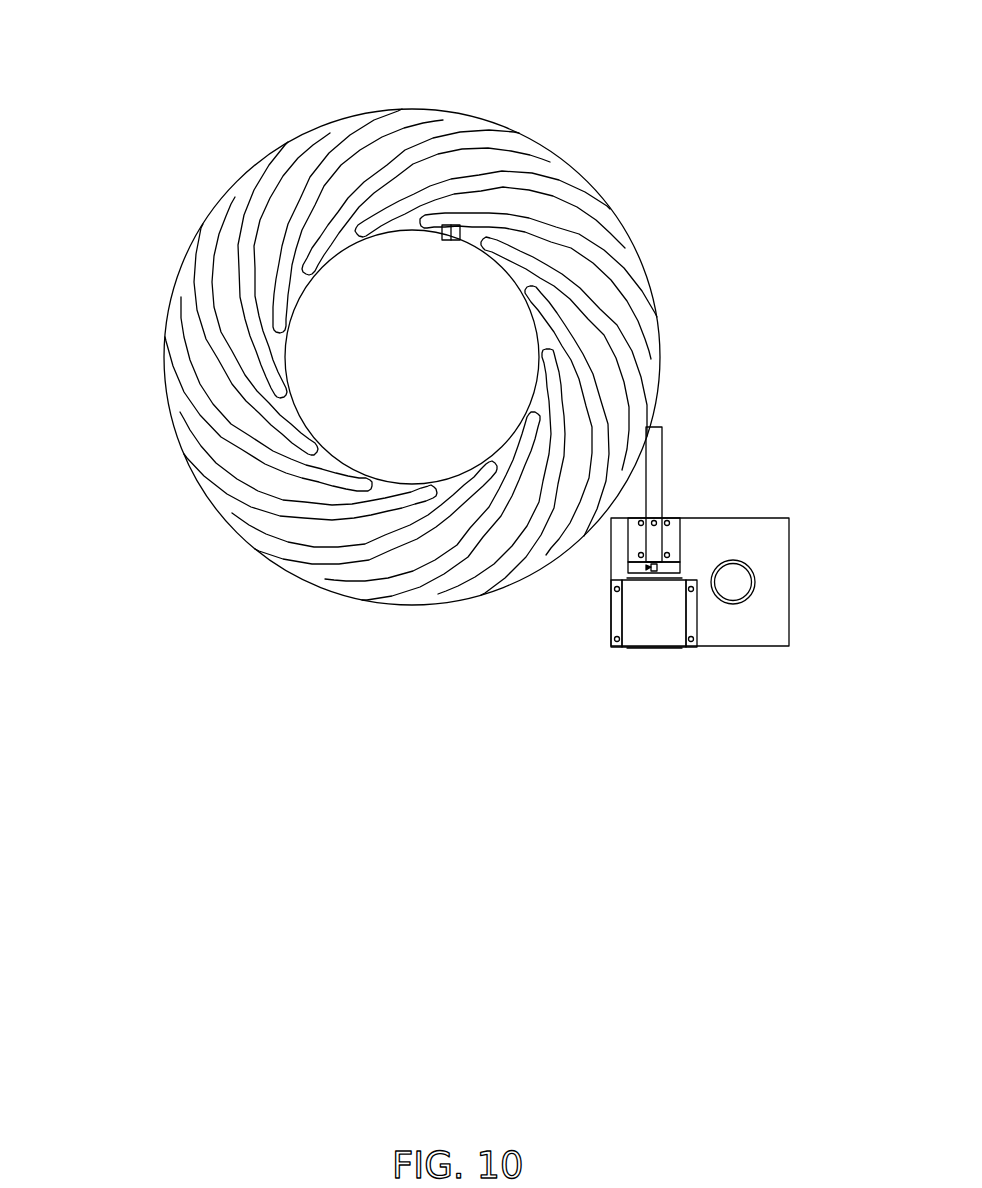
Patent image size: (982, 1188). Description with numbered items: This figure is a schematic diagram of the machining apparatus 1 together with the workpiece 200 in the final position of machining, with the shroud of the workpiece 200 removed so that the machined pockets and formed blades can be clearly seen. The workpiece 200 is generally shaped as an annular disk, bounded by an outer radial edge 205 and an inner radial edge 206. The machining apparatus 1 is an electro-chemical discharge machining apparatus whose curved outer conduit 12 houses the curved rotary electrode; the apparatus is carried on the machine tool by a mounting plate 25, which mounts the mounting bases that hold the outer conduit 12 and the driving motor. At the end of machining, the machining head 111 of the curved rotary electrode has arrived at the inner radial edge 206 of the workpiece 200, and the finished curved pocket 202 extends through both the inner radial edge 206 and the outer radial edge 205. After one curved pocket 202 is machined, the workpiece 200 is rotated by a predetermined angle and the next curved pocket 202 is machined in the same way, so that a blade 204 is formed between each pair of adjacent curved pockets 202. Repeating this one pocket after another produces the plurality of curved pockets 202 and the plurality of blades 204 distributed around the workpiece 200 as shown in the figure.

The machining apparatus 1 is at (653, 436).
The curved outer conduit 12 is at (653, 412).
The mounting plate 25 is at (777, 573).
The machining head 111 is at (447, 242).
The workpiece 200 is at (417, 385).
The curved pocket 202 is at (533, 172).
The blade 204 is at (632, 297).
The outer radial edge 205 is at (478, 115).
The inner radial edge 206 is at (293, 412).